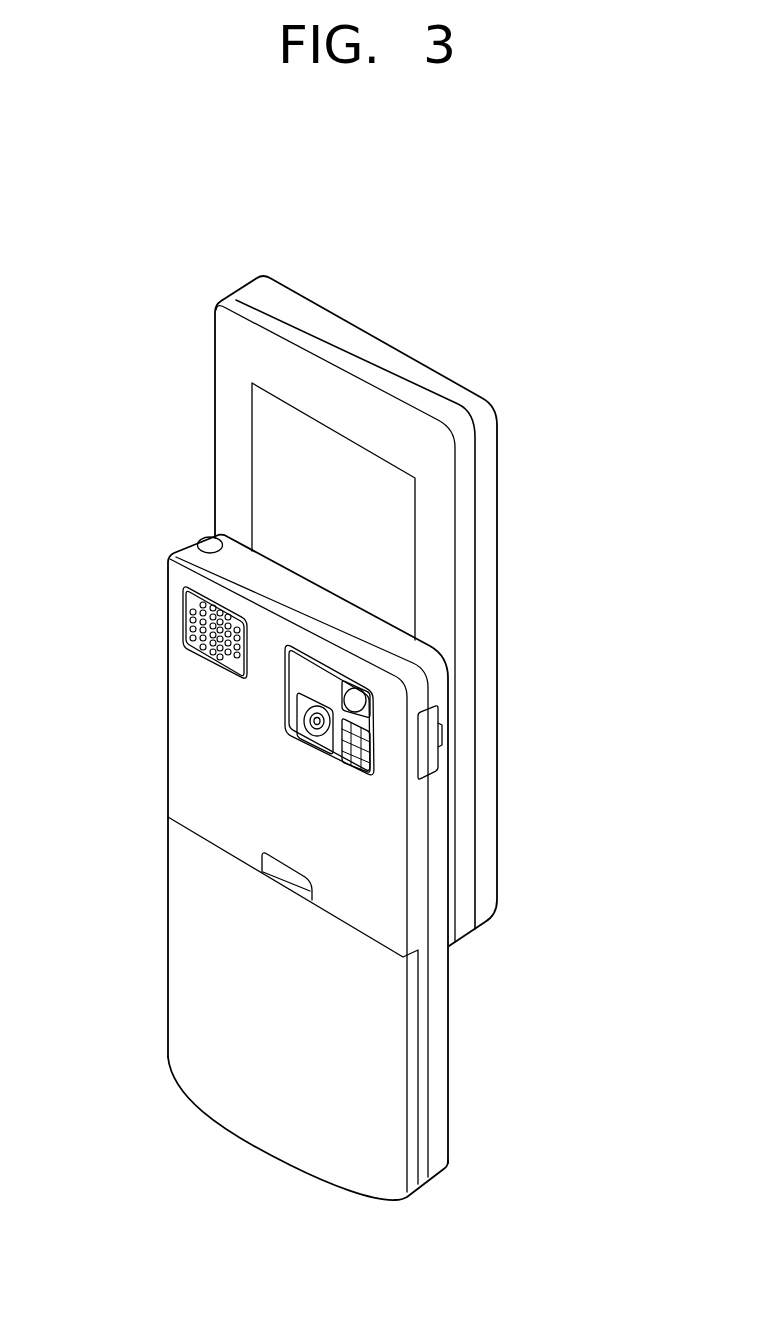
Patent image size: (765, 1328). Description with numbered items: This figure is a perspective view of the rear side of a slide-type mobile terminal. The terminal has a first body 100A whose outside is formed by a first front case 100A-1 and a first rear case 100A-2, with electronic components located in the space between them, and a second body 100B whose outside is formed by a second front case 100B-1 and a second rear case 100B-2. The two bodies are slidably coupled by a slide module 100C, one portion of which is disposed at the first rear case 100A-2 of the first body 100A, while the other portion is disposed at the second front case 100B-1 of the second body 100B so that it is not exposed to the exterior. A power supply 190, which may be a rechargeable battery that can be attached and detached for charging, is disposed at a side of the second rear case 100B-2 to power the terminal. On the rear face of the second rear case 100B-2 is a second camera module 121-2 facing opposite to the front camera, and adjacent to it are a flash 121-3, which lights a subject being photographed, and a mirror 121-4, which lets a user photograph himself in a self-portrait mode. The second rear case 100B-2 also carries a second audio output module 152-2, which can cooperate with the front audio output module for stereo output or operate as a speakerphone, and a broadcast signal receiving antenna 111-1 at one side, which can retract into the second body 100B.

The first body 100A is at (290, 586).
The first front case 100A-1 is at (257, 286).
The first rear case 100A-2 is at (239, 299).
The slide module 100C is at (258, 468).
The broadcast signal receiving antenna 111-1 is at (205, 545).
The second audio output module 152-2 is at (192, 627).
The second body 100B is at (325, 848).
The second front case 100B-1 is at (440, 972).
The second rear case 100B-2 is at (418, 913).
The power supply 190 is at (180, 906).
The second camera module 121-2 is at (318, 722).
The flash 121-3 is at (355, 757).
The mirror 121-4 is at (356, 702).